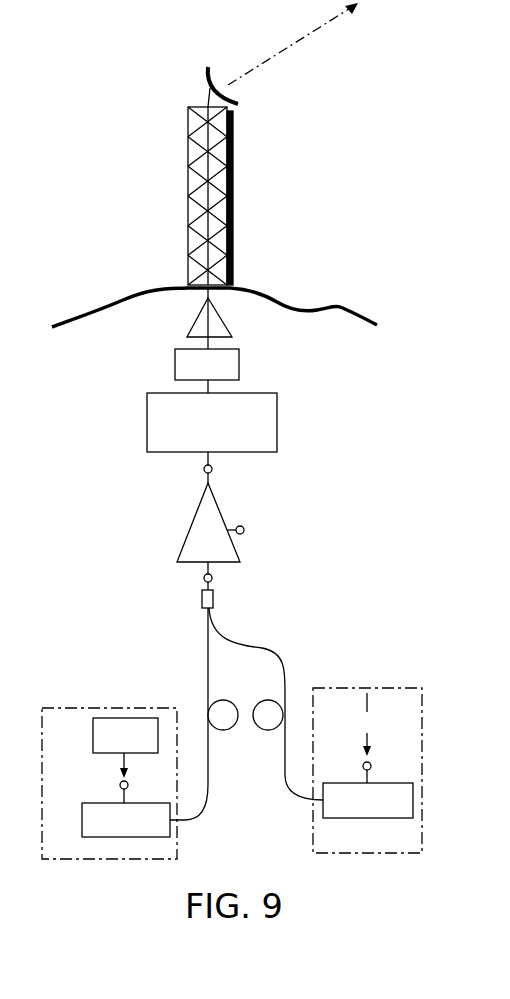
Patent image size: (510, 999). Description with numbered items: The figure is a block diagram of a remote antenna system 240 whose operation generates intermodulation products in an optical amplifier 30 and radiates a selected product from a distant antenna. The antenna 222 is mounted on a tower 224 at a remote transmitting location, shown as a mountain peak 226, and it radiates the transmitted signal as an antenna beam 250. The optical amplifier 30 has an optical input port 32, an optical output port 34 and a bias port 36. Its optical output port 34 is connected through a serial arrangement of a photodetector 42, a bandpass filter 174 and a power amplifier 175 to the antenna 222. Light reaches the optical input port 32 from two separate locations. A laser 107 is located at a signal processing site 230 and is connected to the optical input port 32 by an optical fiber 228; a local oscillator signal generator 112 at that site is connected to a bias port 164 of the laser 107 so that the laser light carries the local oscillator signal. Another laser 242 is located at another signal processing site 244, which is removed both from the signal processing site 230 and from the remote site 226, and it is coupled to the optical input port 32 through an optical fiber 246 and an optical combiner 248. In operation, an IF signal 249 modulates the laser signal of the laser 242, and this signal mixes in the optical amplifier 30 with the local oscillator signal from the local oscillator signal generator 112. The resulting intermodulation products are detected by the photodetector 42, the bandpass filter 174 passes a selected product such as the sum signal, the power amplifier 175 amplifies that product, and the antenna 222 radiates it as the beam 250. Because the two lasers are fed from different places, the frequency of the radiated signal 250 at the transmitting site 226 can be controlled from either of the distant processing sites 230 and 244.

The antenna 222 is at (207, 77).
The antenna beam 250 is at (293, 44).
The tower 224 is at (234, 165).
The remote antenna system 240 is at (153, 247).
The mountain peak 226 is at (274, 298).
The power amplifier 175 is at (233, 328).
The bandpass filter 174 is at (240, 366).
The photodetector 42 is at (278, 414).
The optical output port 34 is at (212, 468).
The bias port 36 is at (244, 529).
The optical amplifier 30 is at (241, 556).
The optical input port 32 is at (212, 577).
The optical combiner 248 is at (201, 598).
The optical fiber 228 is at (207, 658).
The optical fiber 246 is at (262, 645).
The signal processing site 244 is at (383, 686).
The IF signal 249 is at (371, 763).
The laser 242 is at (350, 819).
The signal processing site 230 is at (68, 706).
The local oscillator signal generator 112 is at (115, 717).
The bias port 164 is at (120, 785).
The laser 107 is at (108, 838).